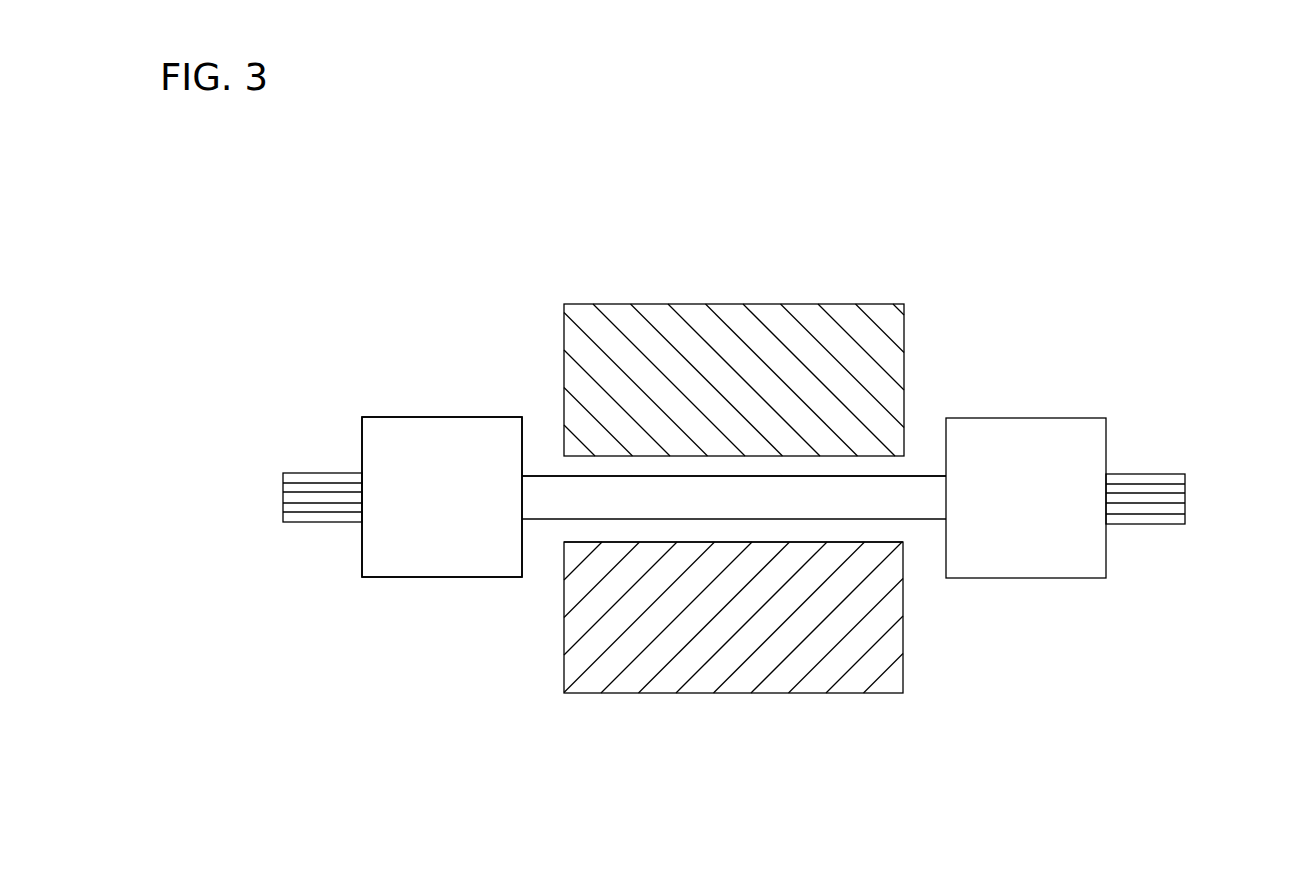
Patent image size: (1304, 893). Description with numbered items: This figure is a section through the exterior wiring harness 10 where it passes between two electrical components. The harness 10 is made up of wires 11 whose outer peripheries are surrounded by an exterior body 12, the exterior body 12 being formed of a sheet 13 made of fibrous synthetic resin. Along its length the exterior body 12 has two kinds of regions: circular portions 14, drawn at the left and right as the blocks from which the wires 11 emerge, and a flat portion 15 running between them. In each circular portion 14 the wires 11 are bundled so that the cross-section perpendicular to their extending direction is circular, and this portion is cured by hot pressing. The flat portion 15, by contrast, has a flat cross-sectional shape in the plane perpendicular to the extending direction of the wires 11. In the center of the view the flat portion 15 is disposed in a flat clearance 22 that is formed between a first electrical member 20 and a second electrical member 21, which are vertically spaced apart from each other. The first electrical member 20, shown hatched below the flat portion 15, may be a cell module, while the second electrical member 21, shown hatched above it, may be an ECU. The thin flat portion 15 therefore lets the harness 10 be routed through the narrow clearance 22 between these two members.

The exterior wiring harness 10 is at (1105, 380).
The wires 11 is at (287, 500).
The exterior body 12 is at (417, 430).
The sheet 13 is at (482, 430).
The circular portion 14 is at (383, 570).
The flat portion 15 is at (553, 493).
The first electrical member 20 is at (888, 673).
The second electrical member 21 is at (877, 327).
The flat clearance 22 is at (748, 547).